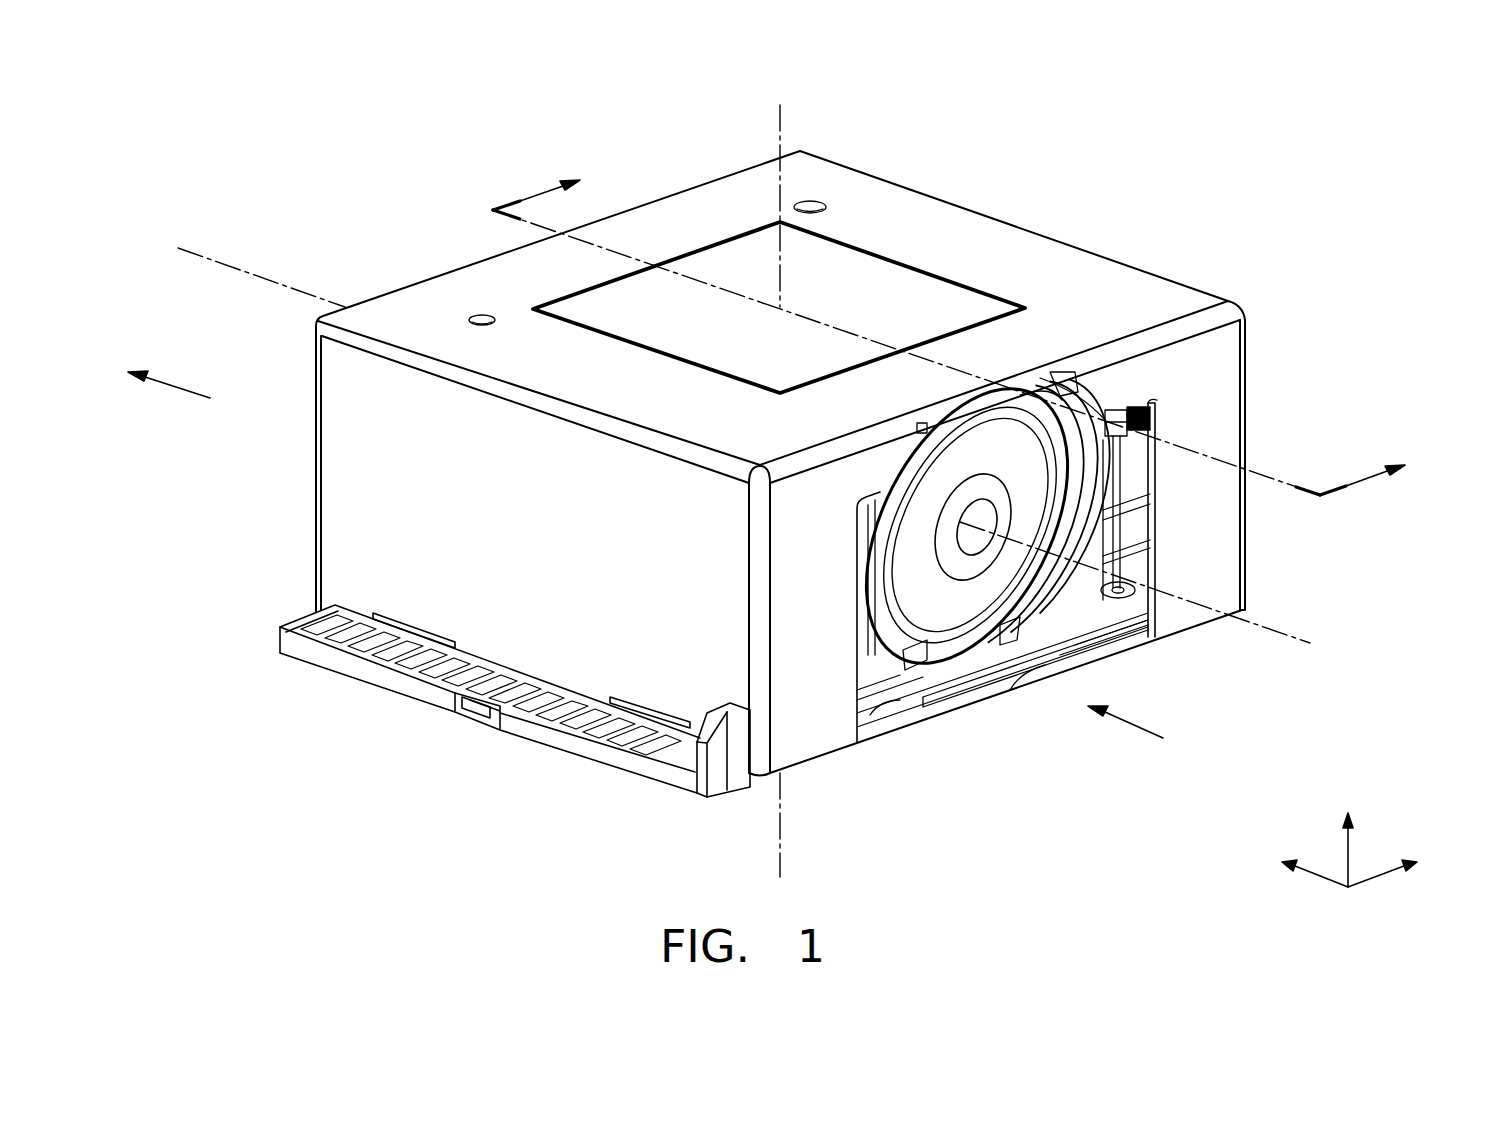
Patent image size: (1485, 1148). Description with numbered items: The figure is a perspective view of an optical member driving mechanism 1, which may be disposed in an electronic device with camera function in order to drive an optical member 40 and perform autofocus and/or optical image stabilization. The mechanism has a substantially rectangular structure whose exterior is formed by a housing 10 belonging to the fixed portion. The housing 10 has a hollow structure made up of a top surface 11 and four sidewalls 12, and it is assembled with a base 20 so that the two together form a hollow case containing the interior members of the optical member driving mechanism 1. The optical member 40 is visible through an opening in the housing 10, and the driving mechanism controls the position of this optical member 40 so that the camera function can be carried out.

The optical member driving mechanism 1 is at (147, 69).
The housing 10 is at (738, 463).
The top surface 11 is at (483, 272).
The sidewalls 12 is at (345, 459).
The base 20 is at (400, 650).
The optical member 40 is at (980, 530).